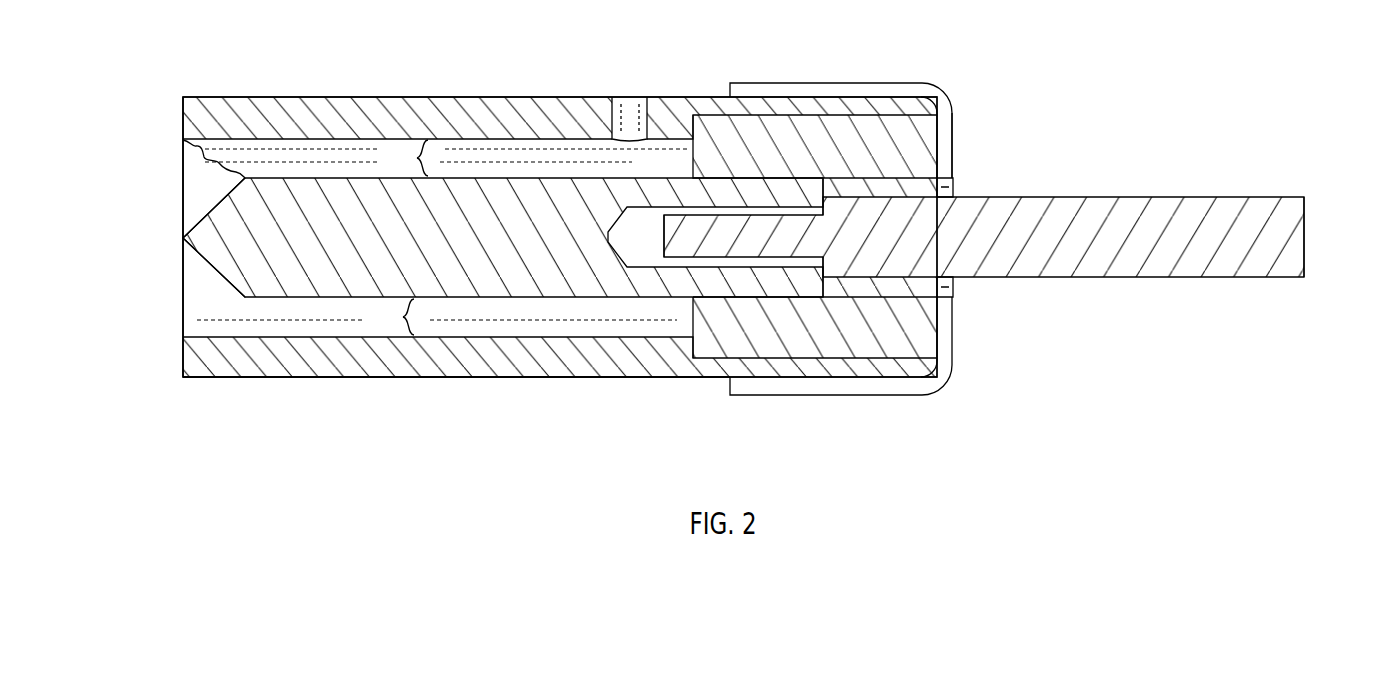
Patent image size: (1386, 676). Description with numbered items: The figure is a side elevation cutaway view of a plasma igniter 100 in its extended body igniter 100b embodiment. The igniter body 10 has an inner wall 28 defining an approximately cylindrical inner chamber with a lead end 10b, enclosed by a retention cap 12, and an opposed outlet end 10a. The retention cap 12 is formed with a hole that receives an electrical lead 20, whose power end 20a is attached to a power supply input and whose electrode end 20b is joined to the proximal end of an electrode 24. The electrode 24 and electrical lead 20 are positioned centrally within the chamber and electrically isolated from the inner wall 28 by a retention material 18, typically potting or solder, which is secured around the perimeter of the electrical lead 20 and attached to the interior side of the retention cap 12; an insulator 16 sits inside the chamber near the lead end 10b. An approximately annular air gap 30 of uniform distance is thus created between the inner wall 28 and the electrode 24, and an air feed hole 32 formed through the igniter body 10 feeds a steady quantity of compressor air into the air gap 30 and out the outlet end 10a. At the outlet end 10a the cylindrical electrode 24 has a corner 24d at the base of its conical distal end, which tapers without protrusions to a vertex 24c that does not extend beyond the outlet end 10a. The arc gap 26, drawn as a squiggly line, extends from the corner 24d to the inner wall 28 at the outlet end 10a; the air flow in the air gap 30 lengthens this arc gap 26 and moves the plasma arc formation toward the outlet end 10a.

The igniter body 10 is at (649, 380).
The outlet end 10a is at (150, 327).
The lead end 10b is at (983, 80).
The retention cap 12 is at (883, 83).
The insulator 16 is at (918, 146).
The retention material 18 is at (938, 287).
The electrical lead 20 is at (1098, 257).
The power end 20a is at (1305, 239).
The electrode end 20b is at (663, 223).
The electrode 24 is at (490, 285).
The vertex 24c is at (183, 238).
The corner 24d is at (246, 178).
The arc gap 26 is at (210, 162).
The inner wall 28 is at (526, 151).
The air gap 30 is at (442, 191).
The air feed hole 32 is at (632, 105).
The plasma igniter 100 is at (215, 565).
The extended body igniter 100b is at (252, 457).